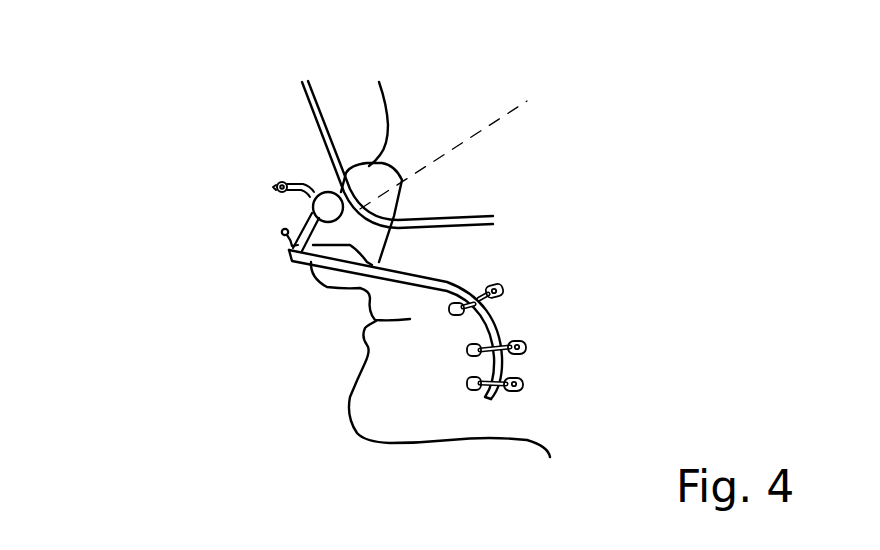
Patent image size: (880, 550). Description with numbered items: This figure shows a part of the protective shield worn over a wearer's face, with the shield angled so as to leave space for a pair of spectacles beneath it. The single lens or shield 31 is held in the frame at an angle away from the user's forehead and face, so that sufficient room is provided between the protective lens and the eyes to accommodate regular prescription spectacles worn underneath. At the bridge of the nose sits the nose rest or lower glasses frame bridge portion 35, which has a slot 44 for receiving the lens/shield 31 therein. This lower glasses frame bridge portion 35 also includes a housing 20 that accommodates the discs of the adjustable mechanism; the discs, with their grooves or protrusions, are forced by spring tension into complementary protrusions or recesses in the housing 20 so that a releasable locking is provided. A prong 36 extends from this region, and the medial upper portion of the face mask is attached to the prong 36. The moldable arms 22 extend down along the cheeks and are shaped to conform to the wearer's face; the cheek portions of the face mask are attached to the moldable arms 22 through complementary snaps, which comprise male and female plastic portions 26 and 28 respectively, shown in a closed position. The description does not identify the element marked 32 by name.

The housing 20 is at (312, 207).
The moldable arms 22 is at (453, 292).
The male snap portion 26 is at (467, 382).
The female snap portion 28 is at (527, 342).
The lens/shield 31 is at (465, 219).
The snap fastener 32 is at (276, 183).
The lower glasses frame bridge portion 35 is at (376, 177).
The prong 36 is at (285, 232).
The slot 44 is at (466, 140).